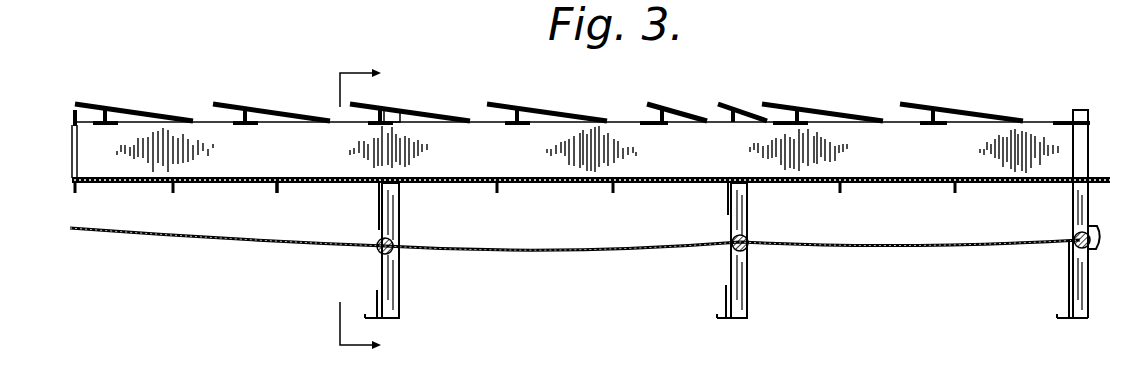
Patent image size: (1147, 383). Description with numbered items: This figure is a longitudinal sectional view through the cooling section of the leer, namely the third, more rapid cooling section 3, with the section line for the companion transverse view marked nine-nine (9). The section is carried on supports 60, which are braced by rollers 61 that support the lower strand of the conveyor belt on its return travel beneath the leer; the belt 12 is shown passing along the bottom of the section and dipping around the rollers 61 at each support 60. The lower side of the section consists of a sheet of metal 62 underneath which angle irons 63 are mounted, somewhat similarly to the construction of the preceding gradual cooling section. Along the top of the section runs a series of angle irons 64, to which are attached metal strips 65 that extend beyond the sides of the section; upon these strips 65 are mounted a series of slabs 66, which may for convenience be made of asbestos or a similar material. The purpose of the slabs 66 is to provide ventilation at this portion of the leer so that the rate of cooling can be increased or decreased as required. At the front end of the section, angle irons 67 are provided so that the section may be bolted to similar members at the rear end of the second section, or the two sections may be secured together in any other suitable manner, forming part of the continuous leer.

The more rapid cooling section 3 is at (684, 92).
The members 9 is at (370, 209).
The deck / cable member 12 is at (316, 178).
The supports 60 is at (400, 212).
The rollers 61 is at (398, 250).
The sheet of metal 62 is at (303, 186).
The angle irons 63 is at (614, 188).
The angle irons 64 is at (237, 118).
The metal strips 65 is at (386, 126).
The slabs 66 is at (258, 112).
The angle irons 67 is at (73, 114).